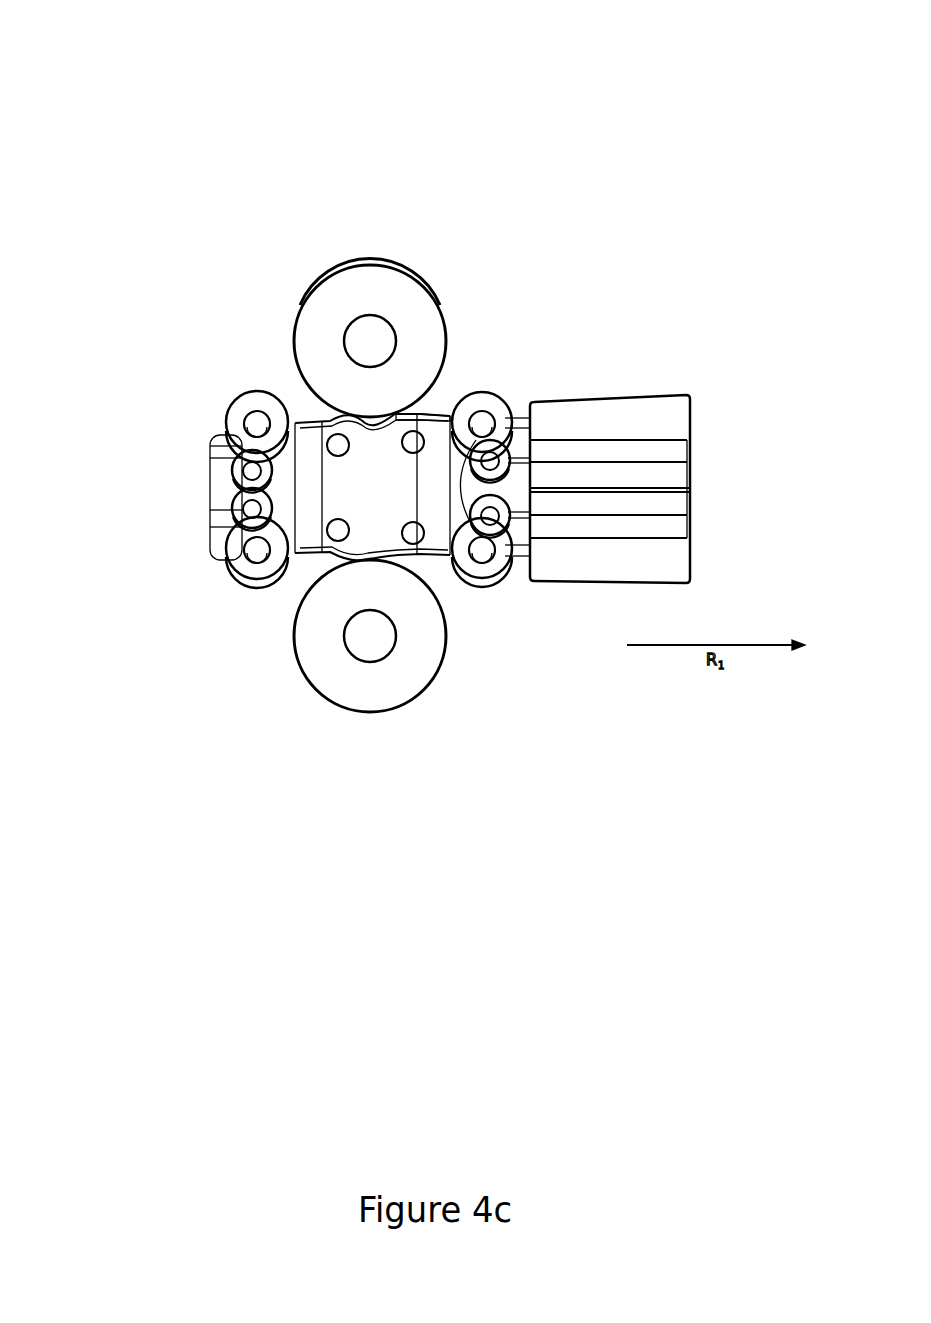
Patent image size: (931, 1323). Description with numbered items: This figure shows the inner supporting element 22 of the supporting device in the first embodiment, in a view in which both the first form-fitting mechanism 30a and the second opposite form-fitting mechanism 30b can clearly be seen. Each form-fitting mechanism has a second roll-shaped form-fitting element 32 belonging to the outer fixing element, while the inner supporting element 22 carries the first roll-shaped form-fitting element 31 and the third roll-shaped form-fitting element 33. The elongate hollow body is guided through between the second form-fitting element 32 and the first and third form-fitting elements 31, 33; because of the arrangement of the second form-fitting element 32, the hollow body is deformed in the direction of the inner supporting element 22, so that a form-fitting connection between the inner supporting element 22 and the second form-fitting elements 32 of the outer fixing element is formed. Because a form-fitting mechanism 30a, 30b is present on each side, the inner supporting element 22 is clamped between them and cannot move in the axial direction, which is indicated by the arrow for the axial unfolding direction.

The first form-fitting mechanism 30a is at (400, 185).
The second opposite form-fitting mechanism 30b is at (420, 758).
The first roll-shaped form-fitting element 31 is at (323, 417).
The second roll-shaped form-fitting element 32 is at (345, 270).
The third roll-shaped form-fitting element 33 is at (403, 415).
The inner supporting element 22 is at (210, 487).